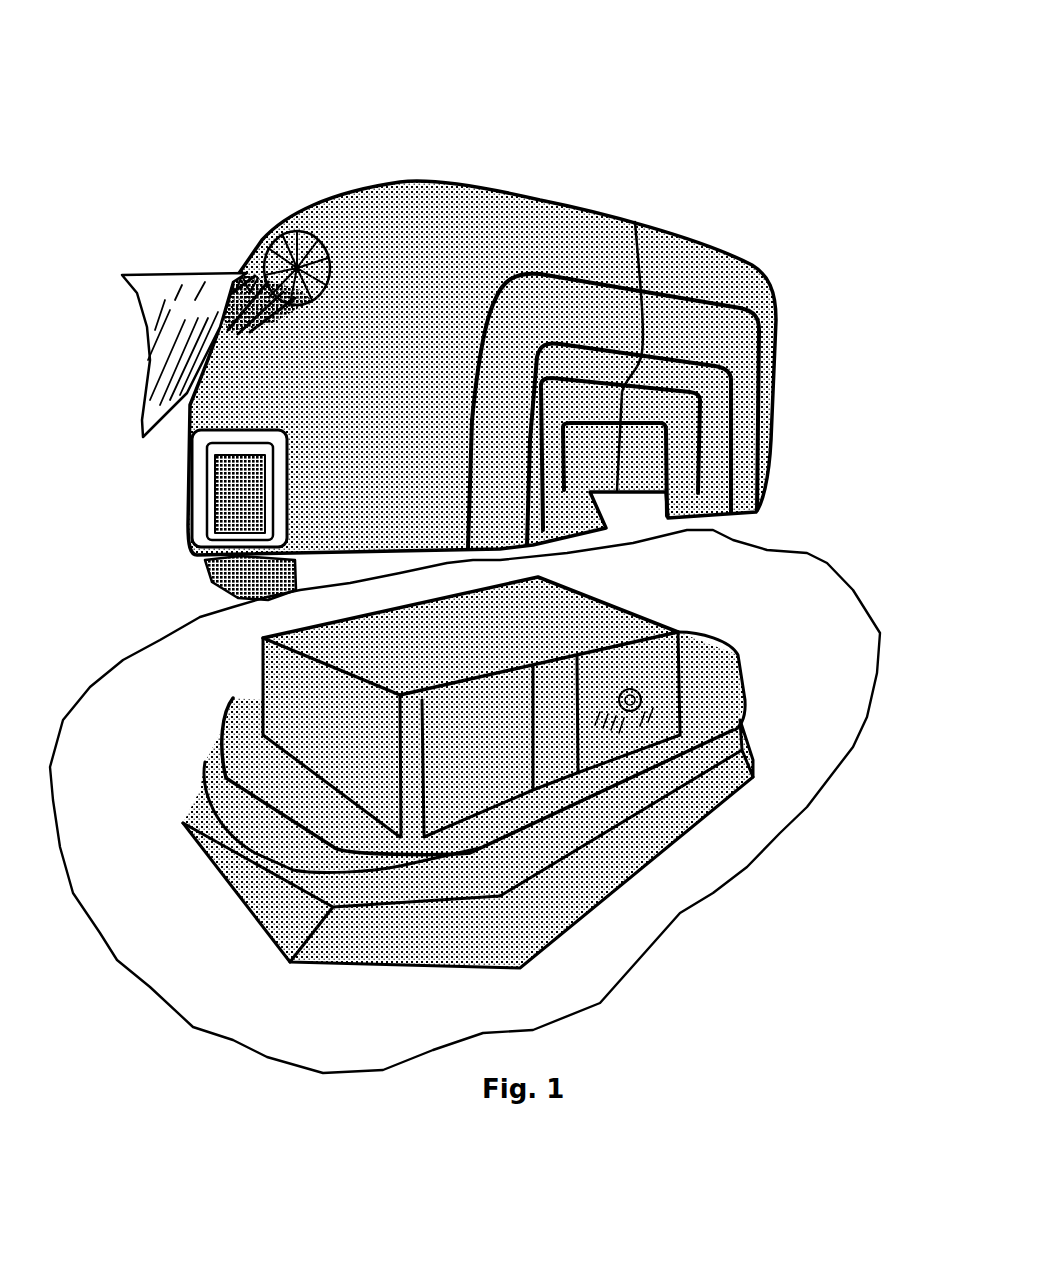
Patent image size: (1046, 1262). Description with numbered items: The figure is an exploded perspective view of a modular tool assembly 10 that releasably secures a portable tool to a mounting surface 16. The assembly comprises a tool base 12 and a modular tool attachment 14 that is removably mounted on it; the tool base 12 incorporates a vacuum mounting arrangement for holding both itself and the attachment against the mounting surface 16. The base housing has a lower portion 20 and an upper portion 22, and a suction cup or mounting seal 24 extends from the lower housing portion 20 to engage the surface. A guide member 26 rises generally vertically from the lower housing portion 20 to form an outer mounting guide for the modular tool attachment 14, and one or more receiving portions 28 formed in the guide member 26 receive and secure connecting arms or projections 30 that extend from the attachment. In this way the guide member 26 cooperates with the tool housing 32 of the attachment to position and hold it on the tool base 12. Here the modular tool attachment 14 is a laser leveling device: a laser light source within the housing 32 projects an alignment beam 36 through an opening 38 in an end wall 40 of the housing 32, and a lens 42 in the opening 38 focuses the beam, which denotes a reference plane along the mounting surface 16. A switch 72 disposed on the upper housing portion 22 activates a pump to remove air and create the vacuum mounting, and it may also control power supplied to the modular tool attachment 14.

The modular tool assembly 10 is at (767, 82).
The tool base 12 is at (749, 650).
The modular tool attachment 14 is at (667, 233).
The mounting surface 16 is at (186, 1030).
The lower housing portion 20 is at (395, 890).
The upper housing portion 22 is at (640, 602).
The suction cup or mounting seal 24 is at (197, 848).
The guide member 26 is at (230, 710).
The receiving portions 28 is at (208, 780).
The connecting arms or projections 30 is at (204, 567).
The tool housing 32 is at (765, 512).
The alignment beam 36 is at (138, 285).
The opening 38 is at (276, 243).
The end wall 40 is at (192, 452).
The lens 42 is at (303, 233).
The switch 72 is at (648, 702).